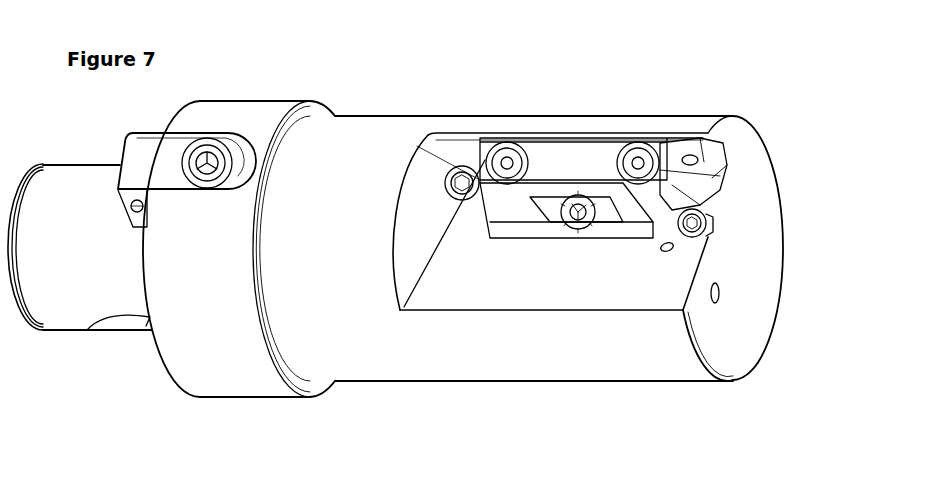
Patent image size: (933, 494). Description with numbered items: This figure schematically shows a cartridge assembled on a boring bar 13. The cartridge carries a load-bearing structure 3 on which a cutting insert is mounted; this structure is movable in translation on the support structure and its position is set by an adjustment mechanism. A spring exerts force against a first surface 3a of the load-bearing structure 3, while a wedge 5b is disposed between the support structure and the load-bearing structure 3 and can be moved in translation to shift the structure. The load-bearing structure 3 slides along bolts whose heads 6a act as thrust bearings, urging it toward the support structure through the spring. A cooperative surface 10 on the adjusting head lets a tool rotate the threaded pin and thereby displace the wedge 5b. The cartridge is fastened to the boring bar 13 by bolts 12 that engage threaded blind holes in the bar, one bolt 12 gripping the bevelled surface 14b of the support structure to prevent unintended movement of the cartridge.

The load-bearing structure 3 is at (700, 188).
The first surface of the load-bearing structure 3a is at (562, 163).
The wedge 5b is at (555, 218).
The head of the bolt 6a is at (500, 150).
The cooperative surface 10 is at (585, 217).
The bolt 12 is at (447, 170).
The boring bar 13 is at (383, 172).
The bevelled surface 14b is at (698, 207).